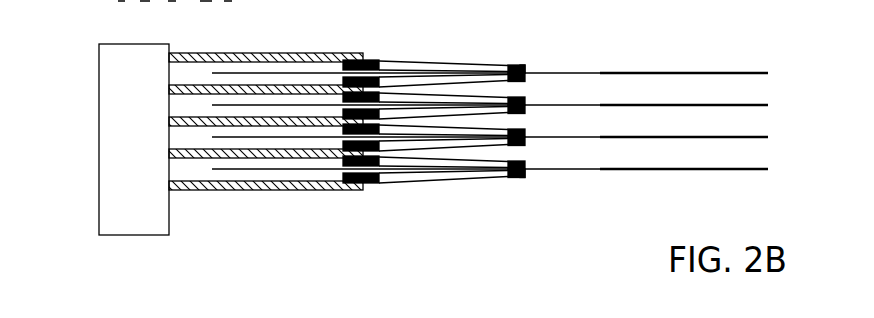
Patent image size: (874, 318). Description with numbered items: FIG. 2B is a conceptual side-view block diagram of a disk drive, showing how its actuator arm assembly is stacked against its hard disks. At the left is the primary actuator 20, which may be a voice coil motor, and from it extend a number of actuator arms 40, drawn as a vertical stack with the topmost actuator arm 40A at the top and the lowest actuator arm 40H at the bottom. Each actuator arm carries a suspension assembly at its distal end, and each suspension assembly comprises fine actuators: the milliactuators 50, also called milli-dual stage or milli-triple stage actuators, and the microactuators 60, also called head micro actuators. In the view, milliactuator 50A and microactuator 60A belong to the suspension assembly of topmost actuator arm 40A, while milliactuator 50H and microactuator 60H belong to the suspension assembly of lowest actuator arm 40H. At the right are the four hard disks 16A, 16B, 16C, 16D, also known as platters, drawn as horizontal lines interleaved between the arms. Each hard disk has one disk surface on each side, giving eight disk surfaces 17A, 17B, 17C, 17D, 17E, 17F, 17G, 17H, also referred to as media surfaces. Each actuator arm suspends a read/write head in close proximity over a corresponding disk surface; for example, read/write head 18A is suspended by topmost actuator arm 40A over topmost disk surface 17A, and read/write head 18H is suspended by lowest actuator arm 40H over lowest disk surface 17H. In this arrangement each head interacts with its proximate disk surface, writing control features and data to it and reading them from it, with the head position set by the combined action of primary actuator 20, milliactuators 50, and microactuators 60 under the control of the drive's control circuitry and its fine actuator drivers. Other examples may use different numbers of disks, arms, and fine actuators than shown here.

The primary actuator 20 is at (98, 81).
The actuator arms 40 is at (278, 214).
The topmost actuator arm 40A is at (285, 52).
The lowest actuator arm 40H is at (234, 191).
The milliactuators 50 is at (383, 214).
The milliactuator 50A is at (390, 56).
The milliactuator 50H is at (390, 186).
The microactuators 60 is at (512, 214).
The microactuator 60A is at (509, 64).
The microactuator 60H is at (509, 180).
The read/write head 18A is at (528, 64).
The read/write head 18H is at (528, 180).
The hard disk 16A is at (774, 73).
The hard disk 16B is at (774, 105).
The hard disk 16C is at (774, 137).
The hard disk 16D is at (774, 169).
The disk surface 17A is at (683, 73).
The disk surface 17B is at (666, 74).
The disk surface 17C is at (683, 105).
The disk surface 17D is at (666, 106).
The disk surface 17E is at (668, 137).
The disk surface 17F is at (651, 138).
The disk surface 17G is at (668, 169).
The disk surface 17H is at (651, 170).